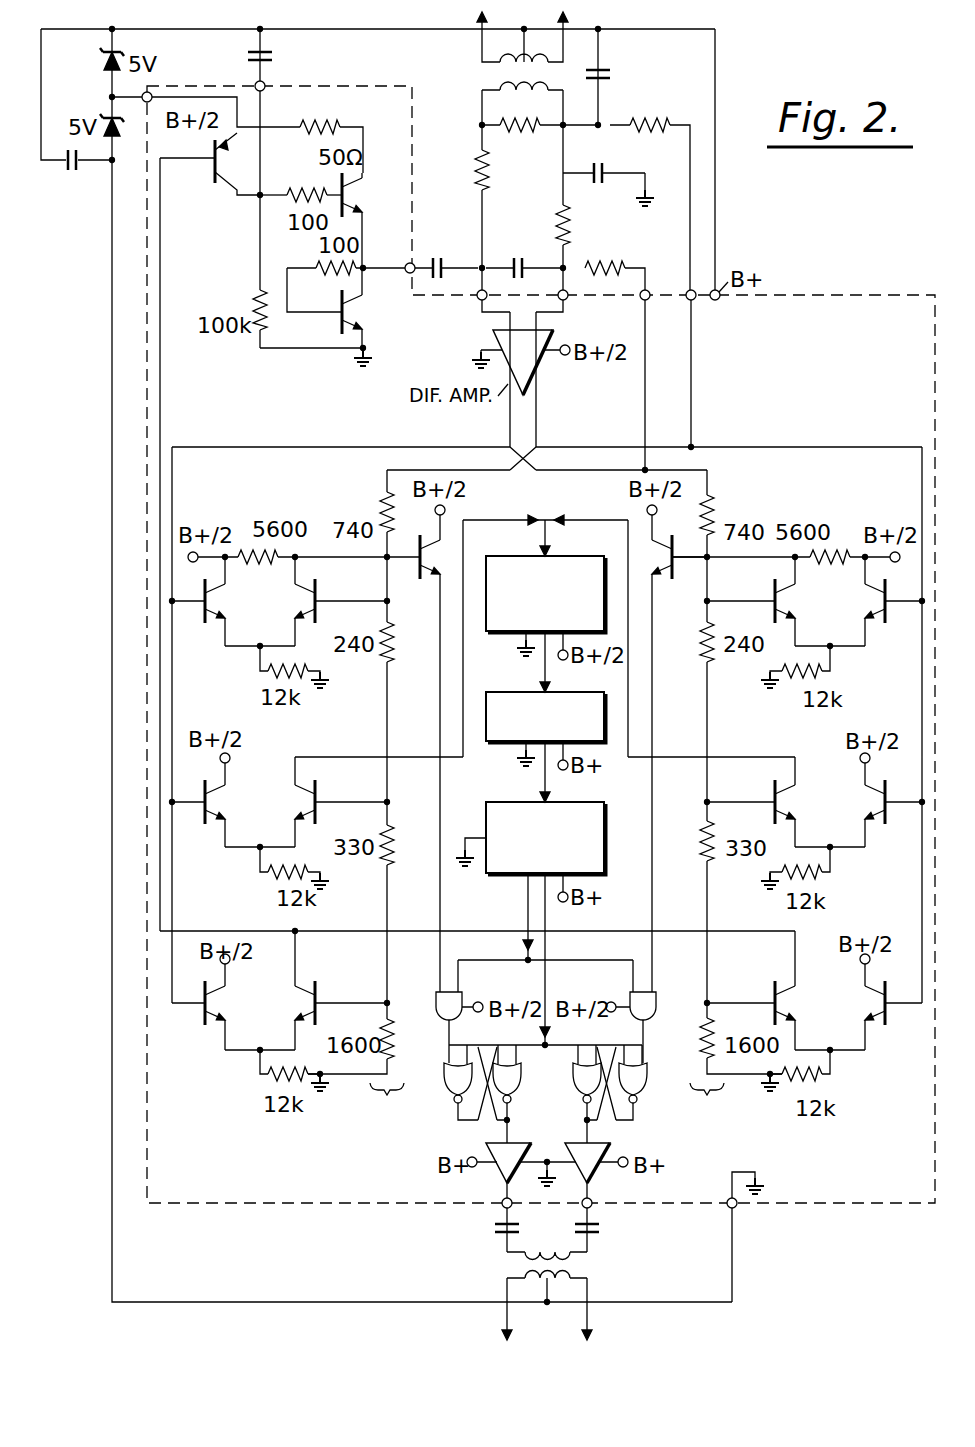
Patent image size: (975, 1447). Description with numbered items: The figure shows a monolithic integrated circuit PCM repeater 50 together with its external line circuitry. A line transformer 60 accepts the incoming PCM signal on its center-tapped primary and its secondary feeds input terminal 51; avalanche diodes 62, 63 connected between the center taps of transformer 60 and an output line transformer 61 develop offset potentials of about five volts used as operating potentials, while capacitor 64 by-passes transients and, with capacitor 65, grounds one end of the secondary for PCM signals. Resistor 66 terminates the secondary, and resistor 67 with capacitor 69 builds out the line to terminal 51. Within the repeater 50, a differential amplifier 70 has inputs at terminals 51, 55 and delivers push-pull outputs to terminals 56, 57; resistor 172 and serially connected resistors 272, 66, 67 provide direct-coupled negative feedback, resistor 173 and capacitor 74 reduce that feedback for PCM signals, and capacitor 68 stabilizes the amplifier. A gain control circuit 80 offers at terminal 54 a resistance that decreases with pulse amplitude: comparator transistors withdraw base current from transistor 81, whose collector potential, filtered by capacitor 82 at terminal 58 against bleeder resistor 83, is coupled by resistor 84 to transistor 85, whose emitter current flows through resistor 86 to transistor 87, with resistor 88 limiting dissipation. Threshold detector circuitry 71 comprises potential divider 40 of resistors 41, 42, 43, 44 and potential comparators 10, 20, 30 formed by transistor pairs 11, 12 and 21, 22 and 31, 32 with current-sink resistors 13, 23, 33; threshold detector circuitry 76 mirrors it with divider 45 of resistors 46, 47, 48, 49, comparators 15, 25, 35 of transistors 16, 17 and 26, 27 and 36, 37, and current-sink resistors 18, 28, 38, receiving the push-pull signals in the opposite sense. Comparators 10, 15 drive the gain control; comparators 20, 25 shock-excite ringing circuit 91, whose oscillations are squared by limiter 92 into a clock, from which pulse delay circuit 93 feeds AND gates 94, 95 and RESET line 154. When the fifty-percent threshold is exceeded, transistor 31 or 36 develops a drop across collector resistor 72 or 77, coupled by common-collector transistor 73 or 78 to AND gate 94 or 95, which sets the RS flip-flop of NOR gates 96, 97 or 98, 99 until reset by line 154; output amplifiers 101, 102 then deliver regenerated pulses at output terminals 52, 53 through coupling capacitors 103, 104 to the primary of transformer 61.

The avalanche diode 62 is at (100, 54).
The avalanche diode 63 is at (103, 120).
The capacitor 64 is at (70, 175).
The terminal 58 is at (255, 84).
The capacitor 82 is at (275, 56).
The resistor 88 is at (322, 120).
The transistor 81 is at (233, 162).
The resistor 84 is at (300, 190).
The transistor 85 is at (355, 180).
The resistor 86 is at (328, 280).
The transistor 87 is at (355, 295).
The bleeder resistor 83 is at (250, 310).
The gain control circuit 80 is at (274, 390).
The terminal 54 is at (405, 266).
The line transformer 60 is at (474, 88).
The capacitor 65 is at (613, 76).
The resistor 272 is at (650, 118).
The resistor 67 is at (475, 172).
The resistor 66 is at (520, 135).
The capacitor 74 is at (600, 162).
The capacitor 69 is at (440, 257).
The capacitor 68 is at (522, 257).
The resistor 173 is at (558, 226).
The resistor 172 is at (615, 260).
The input terminal 51 is at (477, 300).
The terminal 55 is at (567, 300).
The terminal 56 is at (648, 300).
The terminal 57 is at (694, 300).
The differential amplifier 70 is at (497, 336).
The PCM repeater 50 is at (933, 362).
The collector resistor 72 is at (243, 540).
The resistor 44 is at (380, 516).
The common-collector amplifier transistor 73 is at (426, 548).
The ringing circuit 91 is at (514, 556).
The common-collector amplifier transistor 78 is at (668, 548).
The resistor 49 is at (716, 516).
The collector resistor 77 is at (842, 548).
The transistor 32 is at (215, 590).
The transistor 31 is at (308, 590).
The potential comparator 30 is at (274, 637).
The resistor 43 is at (395, 645).
The resistor 48 is at (697, 645).
The transistor 36 is at (782, 590).
The transistor 37 is at (878, 590).
The potential comparator 35 is at (843, 634).
The limiter 92 is at (514, 692).
The current sink resistor 33 is at (300, 680).
The current sink resistor 38 is at (800, 680).
The transistor 22 is at (215, 786).
The transistor 21 is at (308, 788).
The potential comparator 20 is at (272, 836).
The resistor 42 is at (395, 845).
The pulse delay circuit 93 is at (514, 802).
The resistor 47 is at (697, 845).
The transistor 26 is at (783, 790).
The transistor 27 is at (878, 790).
The potential comparator 25 is at (844, 838).
The current sink resistor 23 is at (270, 882).
The current sink resistor 28 is at (816, 880).
The transistor 12 is at (215, 988).
The transistor 11 is at (308, 990).
The potential comparator 10 is at (276, 1038).
The resistor 41 is at (380, 1030).
The AND gate 94 is at (436, 992).
The RESET line 154 is at (549, 983).
The AND gate 95 is at (657, 992).
The transistor 16 is at (783, 990).
The transistor 17 is at (878, 990).
The potential comparator 15 is at (844, 1038).
The resistor 46 is at (718, 1036).
The NOR gate 96 is at (446, 1064).
The NOR gate 98 is at (574, 1078).
The NOR gate 99 is at (646, 1064).
The NOR gate 97 is at (518, 1085).
The current sink resistor 13 is at (272, 1078).
The resistive potential divider 40 is at (387, 1103).
The resistive potential divider 45 is at (707, 1103).
The current sink resistor 18 is at (822, 1082).
The threshold detector circuitry 71 is at (279, 1152).
The threshold detector circuitry 76 is at (844, 1153).
The output amplifier 101 is at (494, 1143).
The output amplifier 102 is at (603, 1143).
The output terminal 52 is at (503, 1205).
The output terminal 53 is at (591, 1205).
The coupling capacitor 103 is at (494, 1228).
The coupling capacitor 104 is at (600, 1228).
The line transformer 61 is at (506, 1282).